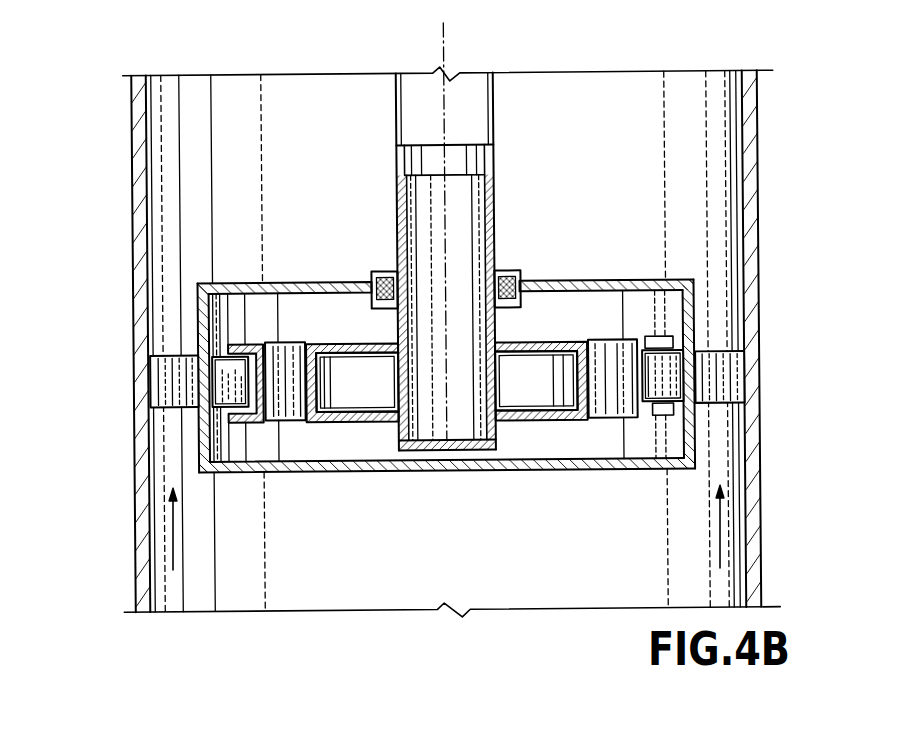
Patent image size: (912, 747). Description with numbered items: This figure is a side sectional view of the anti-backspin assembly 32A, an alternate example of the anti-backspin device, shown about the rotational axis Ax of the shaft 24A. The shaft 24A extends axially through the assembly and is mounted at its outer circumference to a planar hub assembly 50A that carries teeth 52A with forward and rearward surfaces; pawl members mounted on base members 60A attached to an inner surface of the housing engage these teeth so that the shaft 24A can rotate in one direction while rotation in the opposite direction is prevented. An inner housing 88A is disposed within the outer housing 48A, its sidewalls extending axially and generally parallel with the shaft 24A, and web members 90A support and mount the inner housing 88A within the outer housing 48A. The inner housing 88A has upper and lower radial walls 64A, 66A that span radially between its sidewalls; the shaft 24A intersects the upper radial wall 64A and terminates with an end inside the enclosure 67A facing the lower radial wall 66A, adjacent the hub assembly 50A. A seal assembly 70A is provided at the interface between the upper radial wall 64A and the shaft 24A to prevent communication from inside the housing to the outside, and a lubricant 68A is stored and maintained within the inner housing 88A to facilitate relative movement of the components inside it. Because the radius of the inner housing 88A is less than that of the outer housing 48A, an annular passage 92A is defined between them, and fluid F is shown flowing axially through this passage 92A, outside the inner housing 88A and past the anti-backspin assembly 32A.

The rotational axis Ax is at (447, 43).
The shaft 24A is at (477, 112).
The anti-backspin assembly 32A is at (685, 253).
The outer housing 48A is at (135, 533).
The hub assembly 50A is at (577, 342).
The teeth 52A is at (230, 385).
The base member 60A is at (667, 388).
The upper radial wall 64A is at (616, 292).
The lower radial wall 66A is at (458, 473).
The enclosure 67A is at (197, 318).
The lubricant 68A is at (342, 302).
The seal assembly 70A is at (512, 262).
The inner housing 88A is at (268, 287).
The web members 90A is at (727, 375).
The annular passage 92A is at (173, 347).
The fluid F is at (173, 543).